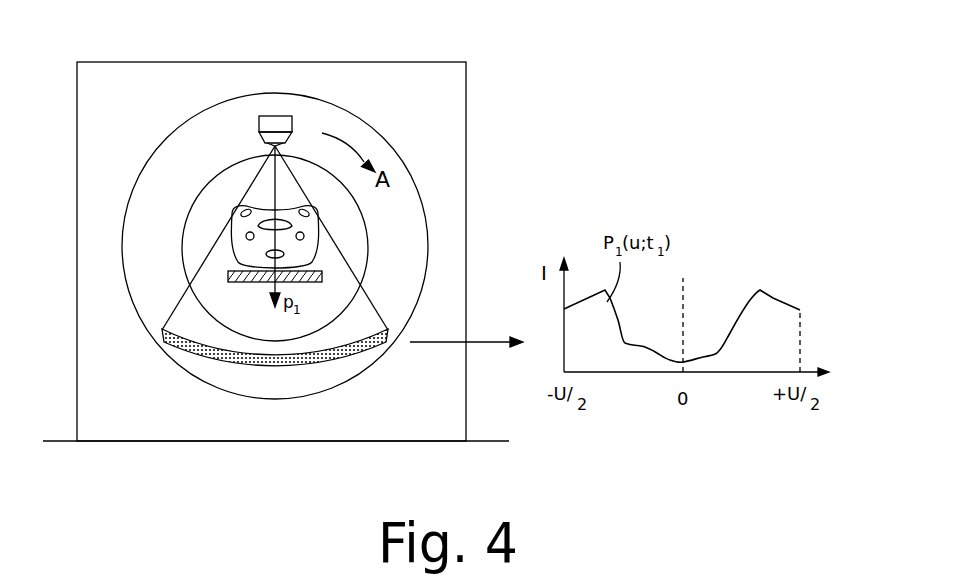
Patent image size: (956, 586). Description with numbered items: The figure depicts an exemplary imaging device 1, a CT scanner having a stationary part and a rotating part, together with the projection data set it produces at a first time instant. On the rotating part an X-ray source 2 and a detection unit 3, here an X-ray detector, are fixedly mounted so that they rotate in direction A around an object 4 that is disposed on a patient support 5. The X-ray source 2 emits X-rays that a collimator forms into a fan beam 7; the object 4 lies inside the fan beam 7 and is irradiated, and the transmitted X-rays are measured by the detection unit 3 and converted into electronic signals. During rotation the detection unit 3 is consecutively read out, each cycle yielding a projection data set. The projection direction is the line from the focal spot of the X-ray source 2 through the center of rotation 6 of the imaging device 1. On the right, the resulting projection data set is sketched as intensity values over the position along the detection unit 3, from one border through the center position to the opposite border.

The imaging device 1 is at (466, 102).
The X-ray source 2 is at (275, 116).
The detection unit 3 is at (371, 355).
The object 4 is at (313, 233).
The patient support 5 is at (322, 276).
The center of rotation 6 is at (270, 251).
The fan beam 7 is at (199, 270).